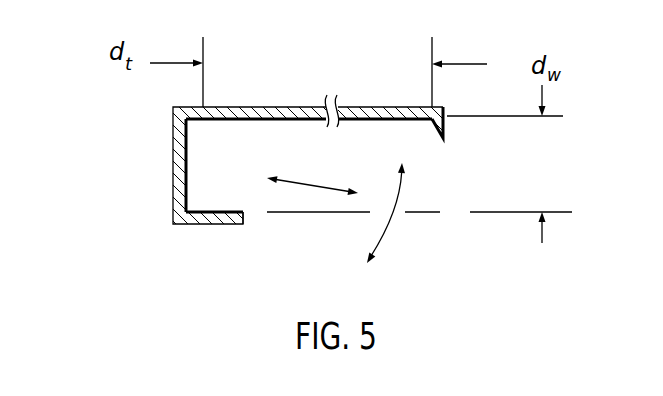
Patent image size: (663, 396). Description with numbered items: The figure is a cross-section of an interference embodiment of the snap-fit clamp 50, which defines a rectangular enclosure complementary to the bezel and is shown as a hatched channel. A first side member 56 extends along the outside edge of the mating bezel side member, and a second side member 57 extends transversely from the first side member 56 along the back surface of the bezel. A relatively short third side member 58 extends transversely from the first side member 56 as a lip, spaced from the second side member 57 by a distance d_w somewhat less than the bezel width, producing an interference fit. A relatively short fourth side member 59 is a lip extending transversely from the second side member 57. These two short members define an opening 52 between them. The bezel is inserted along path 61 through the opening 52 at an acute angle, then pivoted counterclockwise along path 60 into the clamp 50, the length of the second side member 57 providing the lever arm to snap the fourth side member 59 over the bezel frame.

The snap-fit clamp 50 is at (158, 98).
The opening 52 is at (247, 218).
The first side member 56 is at (180, 181).
The second side member 57 is at (262, 107).
The third side member 58 is at (215, 224).
The fourth side member 59 is at (447, 127).
The pivoting path 60 is at (392, 215).
The insertion path 61 is at (318, 183).